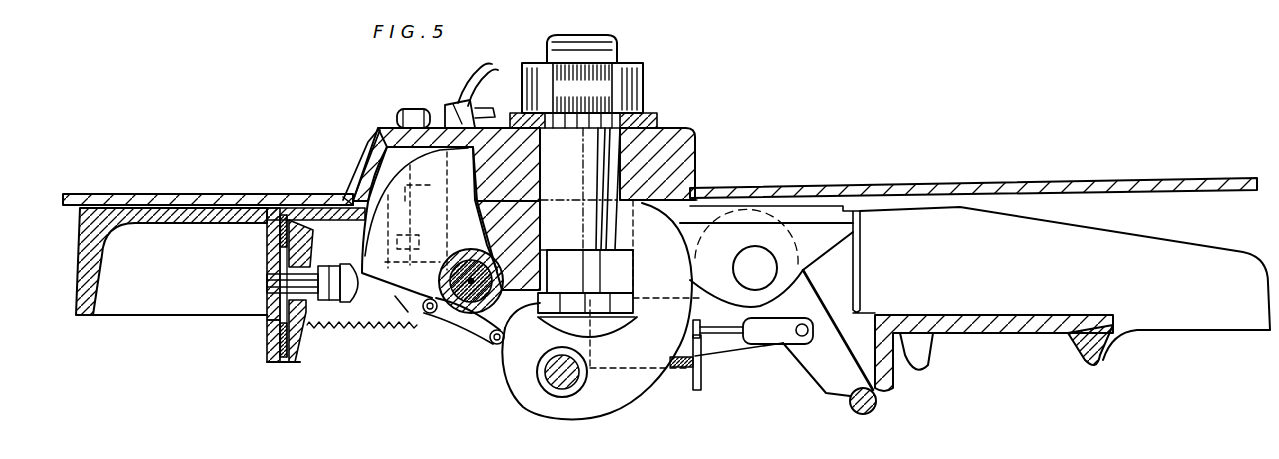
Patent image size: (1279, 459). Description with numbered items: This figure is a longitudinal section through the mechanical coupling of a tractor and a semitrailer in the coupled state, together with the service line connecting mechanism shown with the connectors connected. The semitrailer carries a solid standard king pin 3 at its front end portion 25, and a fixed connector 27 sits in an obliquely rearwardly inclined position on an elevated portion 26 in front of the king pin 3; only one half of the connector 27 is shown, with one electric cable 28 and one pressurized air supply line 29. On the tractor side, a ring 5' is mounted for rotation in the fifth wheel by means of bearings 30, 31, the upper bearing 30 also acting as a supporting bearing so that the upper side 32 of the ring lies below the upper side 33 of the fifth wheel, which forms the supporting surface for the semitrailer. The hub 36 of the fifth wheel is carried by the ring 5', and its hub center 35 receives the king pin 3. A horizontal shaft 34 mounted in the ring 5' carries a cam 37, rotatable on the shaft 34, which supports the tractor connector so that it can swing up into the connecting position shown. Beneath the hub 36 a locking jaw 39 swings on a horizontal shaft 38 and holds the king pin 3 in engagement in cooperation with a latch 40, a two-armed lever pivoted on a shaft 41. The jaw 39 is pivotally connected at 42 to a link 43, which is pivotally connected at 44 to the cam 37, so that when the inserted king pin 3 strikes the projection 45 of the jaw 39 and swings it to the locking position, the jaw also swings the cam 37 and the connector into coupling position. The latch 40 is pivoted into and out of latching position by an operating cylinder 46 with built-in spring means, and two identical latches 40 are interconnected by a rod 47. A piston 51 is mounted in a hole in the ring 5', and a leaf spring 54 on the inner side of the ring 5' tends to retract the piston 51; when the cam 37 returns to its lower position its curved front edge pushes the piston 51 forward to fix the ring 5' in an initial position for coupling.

The king pin 3 is at (638, 163).
The ring 5' is at (328, 185).
The front end portion 25 is at (878, 182).
The elevated portion 26 is at (362, 160).
The fixed connector 27 is at (385, 146).
The electric cable 28 is at (475, 70).
The pressurized air supply line 29 is at (428, 109).
The bearing 30 is at (268, 243).
The bearing 31 is at (268, 342).
The upper side of the ring 32 is at (283, 206).
The upper side of the fifth wheel 33 is at (205, 196).
The horizontal shaft 34 is at (442, 254).
The hub center 35 is at (583, 142).
The hub 36 is at (503, 220).
The cam 37 is at (365, 250).
The horizontal shaft 38 is at (547, 383).
The locking jaw 39 is at (656, 354).
The latch 40 is at (697, 283).
The shaft 41 is at (758, 262).
The pivot connection 42 is at (497, 345).
The link 43 is at (462, 334).
The pivot connection 44 is at (436, 314).
The projection 45 is at (552, 256).
The operating cylinder 46 is at (700, 345).
The rod 47 is at (850, 412).
The piston 51 is at (275, 283).
The leaf spring 54 is at (278, 290).